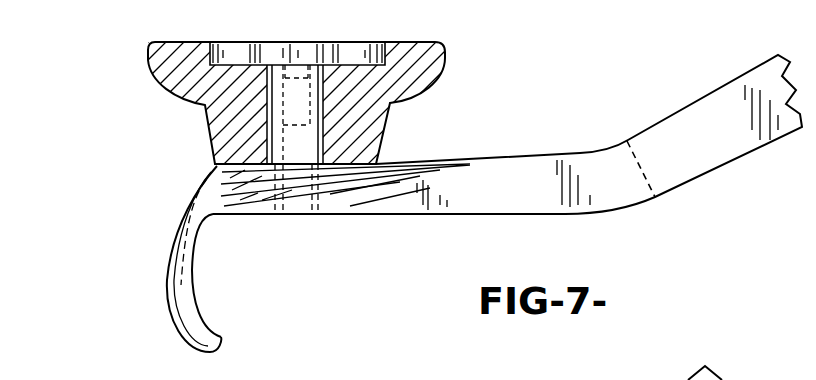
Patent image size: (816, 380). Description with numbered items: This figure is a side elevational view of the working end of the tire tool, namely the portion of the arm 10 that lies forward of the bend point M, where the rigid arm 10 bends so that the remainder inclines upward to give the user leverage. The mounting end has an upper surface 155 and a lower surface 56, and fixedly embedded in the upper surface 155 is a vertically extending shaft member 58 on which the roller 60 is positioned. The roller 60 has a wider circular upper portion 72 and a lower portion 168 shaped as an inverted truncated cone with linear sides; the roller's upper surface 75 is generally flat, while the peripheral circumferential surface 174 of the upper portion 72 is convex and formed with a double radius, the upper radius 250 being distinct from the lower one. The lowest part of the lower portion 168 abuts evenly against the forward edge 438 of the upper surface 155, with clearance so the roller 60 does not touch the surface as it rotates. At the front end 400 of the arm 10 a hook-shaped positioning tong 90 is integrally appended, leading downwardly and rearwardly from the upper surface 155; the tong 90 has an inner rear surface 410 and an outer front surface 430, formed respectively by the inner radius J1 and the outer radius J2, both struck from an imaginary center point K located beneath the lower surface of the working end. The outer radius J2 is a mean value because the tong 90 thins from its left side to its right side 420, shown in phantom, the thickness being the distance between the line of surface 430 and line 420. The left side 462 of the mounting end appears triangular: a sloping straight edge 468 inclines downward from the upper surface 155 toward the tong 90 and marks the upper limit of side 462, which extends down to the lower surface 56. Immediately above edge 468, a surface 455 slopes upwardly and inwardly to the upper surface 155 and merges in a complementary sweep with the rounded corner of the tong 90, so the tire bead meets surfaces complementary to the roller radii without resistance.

The arm 10 is at (710, 92).
The lower surface 56 is at (368, 215).
The shaft member 58 is at (275, 104).
The roller 60 is at (437, 46).
The upper portion 72 is at (152, 91).
The upper surface 75 is at (200, 43).
The positioning tong 90 is at (180, 218).
The upper surface 155 is at (393, 167).
The lower portion 168 is at (383, 124).
The circumferential surface 174 is at (147, 74).
The upper radius 250 is at (147, 61).
The front end 400 is at (146, 277).
The inner rear surface 410 is at (192, 282).
The right side 420 is at (176, 245).
The outer front surface 430 is at (185, 328).
The forward edge 438 is at (210, 162).
The sloping surface 455 is at (225, 182).
The left side 462 is at (393, 208).
The sloping straight edge 468 is at (262, 187).
The bend point M is at (548, 214).
The imaginary center point K is at (246, 262).
The inner radius J1 is at (203, 250).
The outer radius J2 is at (228, 362).